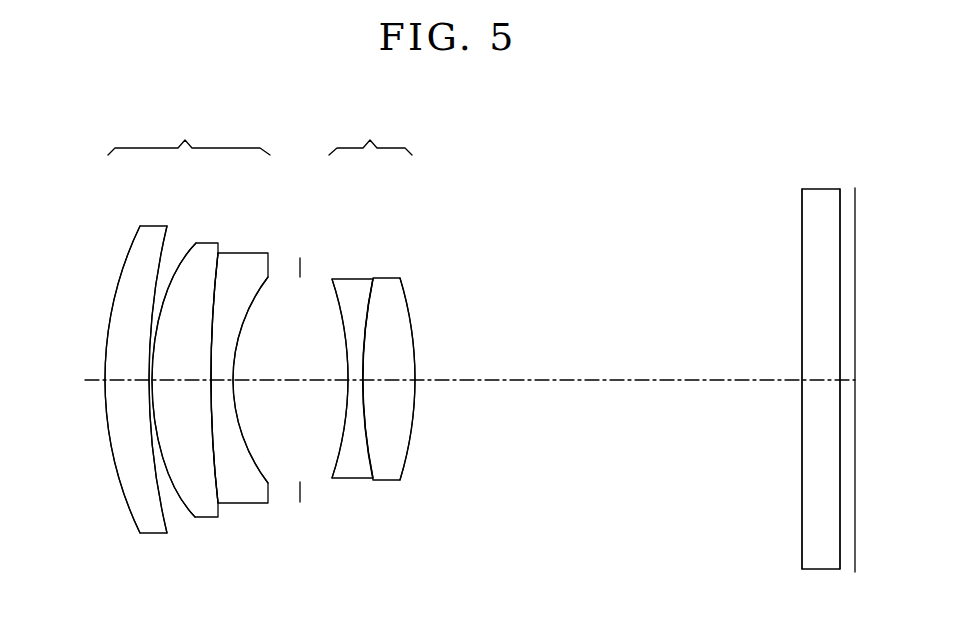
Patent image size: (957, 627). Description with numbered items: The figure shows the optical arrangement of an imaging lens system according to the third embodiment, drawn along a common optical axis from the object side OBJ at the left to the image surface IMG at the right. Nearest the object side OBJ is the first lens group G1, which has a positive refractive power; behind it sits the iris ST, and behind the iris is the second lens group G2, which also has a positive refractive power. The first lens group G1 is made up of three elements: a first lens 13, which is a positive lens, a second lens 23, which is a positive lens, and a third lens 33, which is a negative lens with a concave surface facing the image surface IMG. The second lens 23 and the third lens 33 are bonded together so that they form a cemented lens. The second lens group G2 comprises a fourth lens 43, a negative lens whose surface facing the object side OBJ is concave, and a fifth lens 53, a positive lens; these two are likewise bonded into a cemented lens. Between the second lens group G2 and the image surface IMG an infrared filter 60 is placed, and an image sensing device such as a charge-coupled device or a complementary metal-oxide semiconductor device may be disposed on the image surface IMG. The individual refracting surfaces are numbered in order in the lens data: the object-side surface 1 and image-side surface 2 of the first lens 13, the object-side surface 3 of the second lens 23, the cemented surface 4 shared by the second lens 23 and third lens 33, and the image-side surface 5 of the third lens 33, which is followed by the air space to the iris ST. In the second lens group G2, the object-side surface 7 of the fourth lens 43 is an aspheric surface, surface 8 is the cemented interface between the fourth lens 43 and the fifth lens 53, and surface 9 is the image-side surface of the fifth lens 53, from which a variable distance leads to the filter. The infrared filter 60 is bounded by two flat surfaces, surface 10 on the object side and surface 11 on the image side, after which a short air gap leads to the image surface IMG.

The first surface 1 is at (129, 512).
The second surface 2 is at (165, 513).
The third surface 3 is at (183, 503).
The fourth surface 4 is at (217, 467).
The fifth surface 5 is at (258, 467).
The seventh surface 7 is at (335, 460).
The eighth surface 8 is at (370, 467).
The ninth surface 9 is at (405, 465).
The tenth surface 10 is at (802, 539).
The eleventh surface 11 is at (840, 548).
The first lens 13 is at (153, 232).
The second lens 23 is at (208, 250).
The third lens 33 is at (253, 257).
The fourth lens 43 is at (349, 283).
The fifth lens 53 is at (388, 283).
The infrared filter 60 is at (817, 192).
The first lens group G1 is at (189, 134).
The second lens group G2 is at (370, 134).
The iris ST is at (300, 270).
The image surface IMG is at (856, 213).
The object side OBJ is at (444, 382).